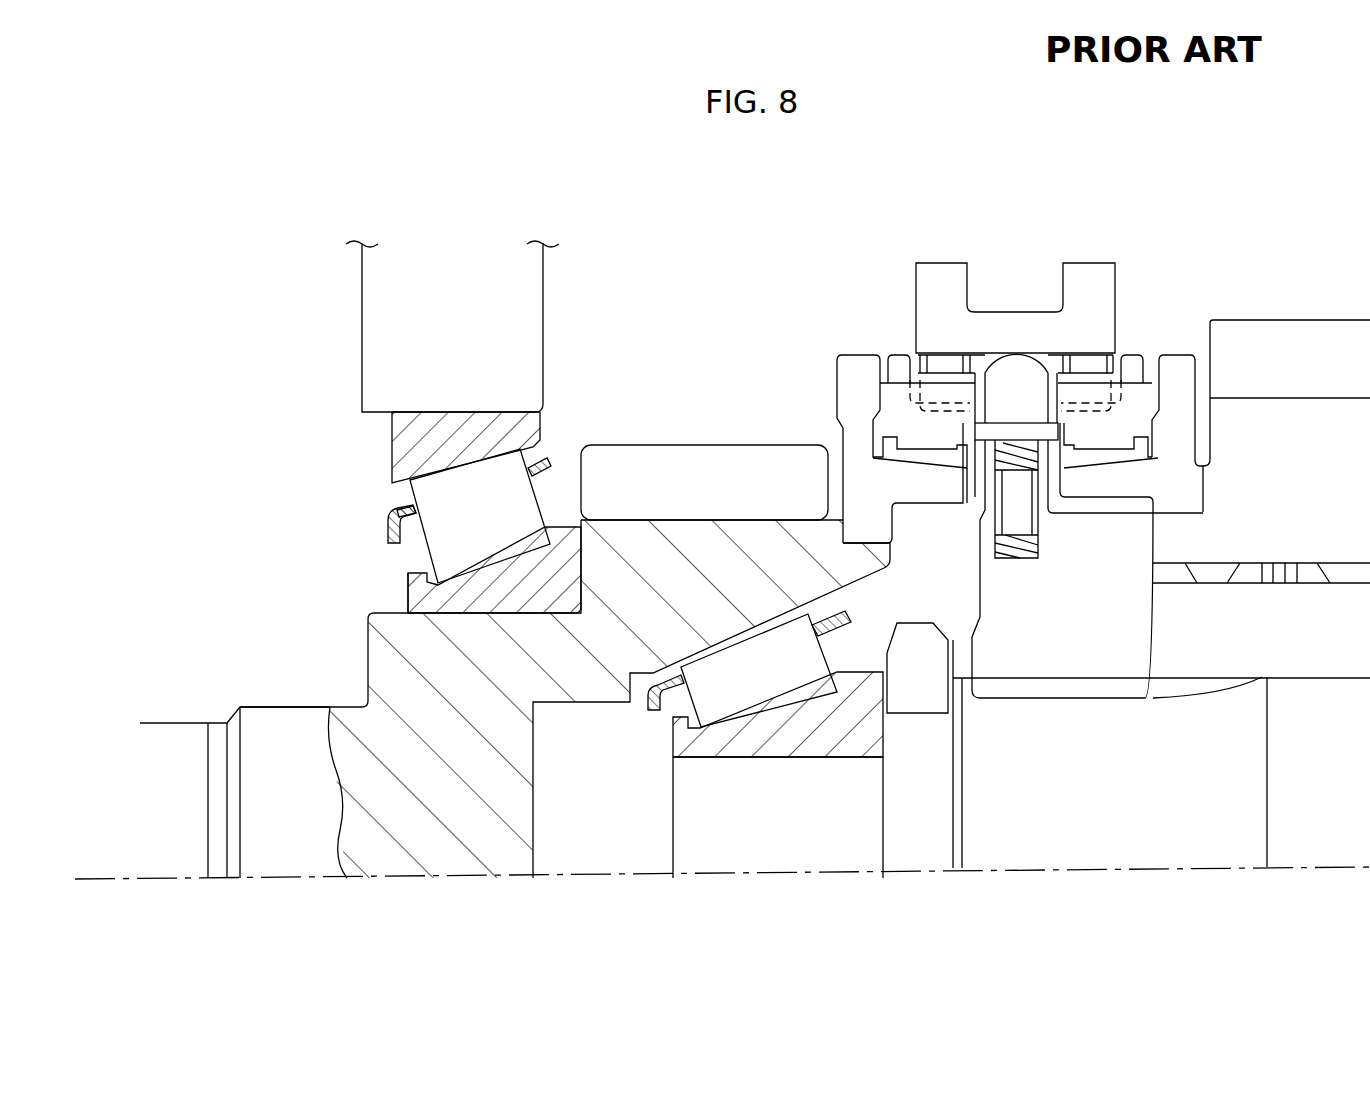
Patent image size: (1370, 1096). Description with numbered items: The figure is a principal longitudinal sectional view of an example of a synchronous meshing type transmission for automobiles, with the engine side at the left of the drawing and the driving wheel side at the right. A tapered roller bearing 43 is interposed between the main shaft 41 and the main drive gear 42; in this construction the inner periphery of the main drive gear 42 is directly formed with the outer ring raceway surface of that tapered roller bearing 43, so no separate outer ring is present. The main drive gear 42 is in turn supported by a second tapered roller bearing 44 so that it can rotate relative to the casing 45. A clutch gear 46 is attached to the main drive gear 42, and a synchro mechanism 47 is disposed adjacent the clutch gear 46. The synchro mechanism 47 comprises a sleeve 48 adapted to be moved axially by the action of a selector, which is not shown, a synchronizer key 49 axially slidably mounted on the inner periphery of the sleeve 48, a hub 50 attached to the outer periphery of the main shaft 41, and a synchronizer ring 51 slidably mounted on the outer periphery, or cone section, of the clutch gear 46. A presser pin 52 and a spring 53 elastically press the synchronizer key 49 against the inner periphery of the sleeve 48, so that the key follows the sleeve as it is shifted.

The main shaft 41 is at (1245, 777).
The main drive gear 42 is at (664, 535).
The tapered roller bearing 43 is at (635, 731).
The tapered roller bearing 44 is at (373, 548).
The casing 45 is at (520, 305).
The clutch gear 46 is at (848, 394).
The synchro mechanism 47 is at (1158, 293).
The sleeve 48 is at (1089, 275).
The synchronizer key 49 is at (1095, 387).
The hub 50 is at (1130, 628).
The synchronizer ring 51 is at (905, 390).
The presser pin 52 is at (1025, 405).
The spring 53 is at (1020, 456).